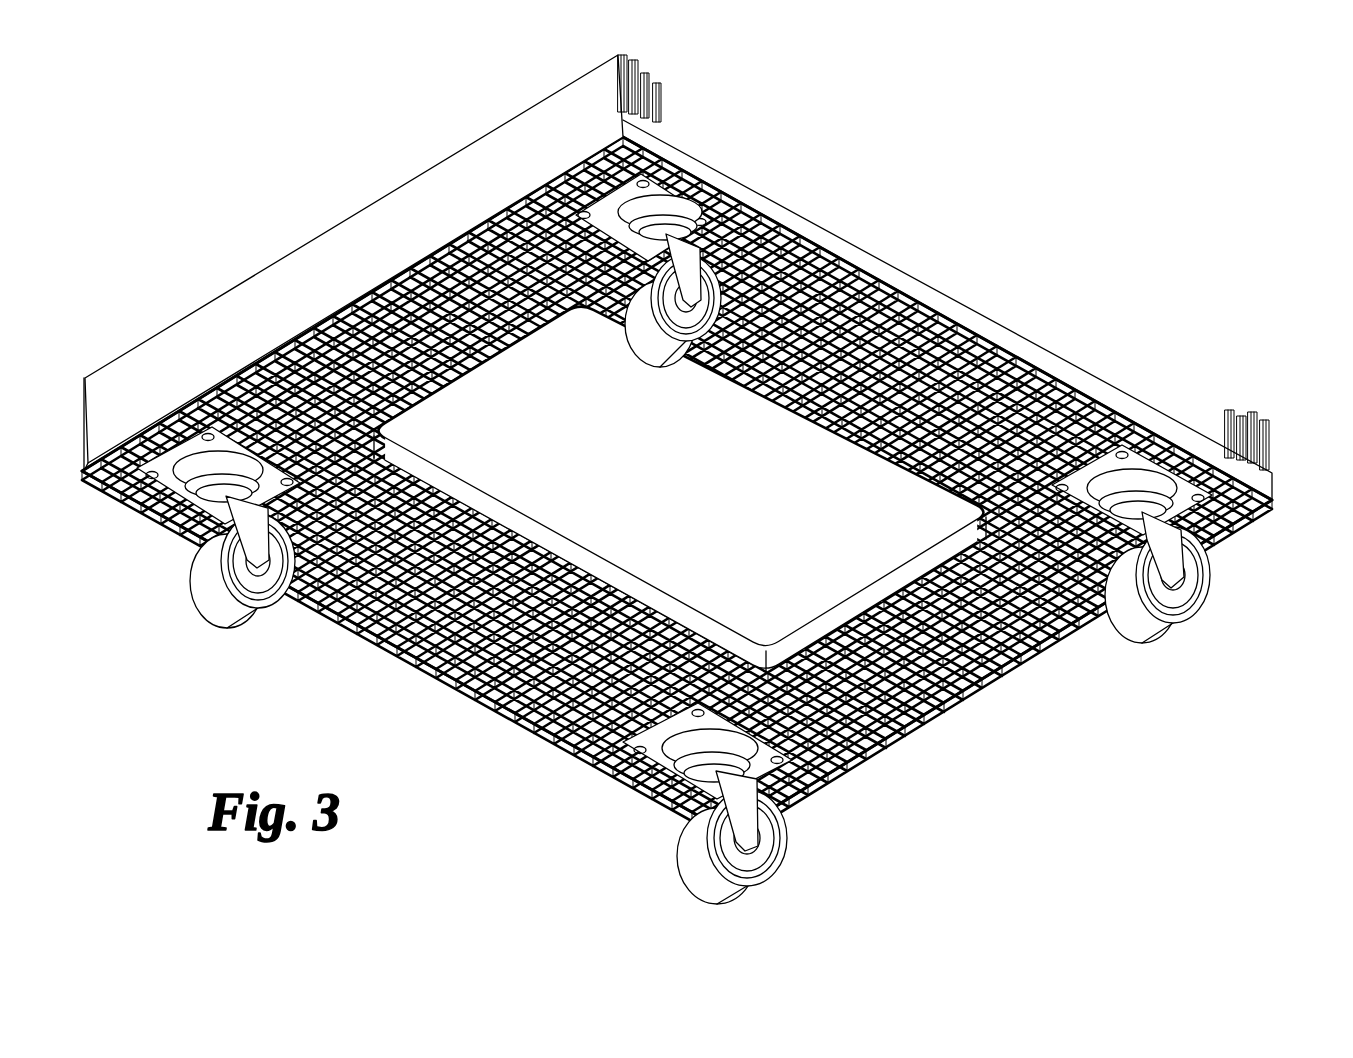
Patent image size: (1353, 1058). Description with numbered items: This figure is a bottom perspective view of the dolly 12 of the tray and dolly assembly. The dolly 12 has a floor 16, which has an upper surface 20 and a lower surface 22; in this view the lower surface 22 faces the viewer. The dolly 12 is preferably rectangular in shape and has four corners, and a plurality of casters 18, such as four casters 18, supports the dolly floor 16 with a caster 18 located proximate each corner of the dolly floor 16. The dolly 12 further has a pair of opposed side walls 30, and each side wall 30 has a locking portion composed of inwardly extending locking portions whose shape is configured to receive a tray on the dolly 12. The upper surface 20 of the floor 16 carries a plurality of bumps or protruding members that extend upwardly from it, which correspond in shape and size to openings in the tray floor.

The dolly 12 is at (835, 211).
The floor 16 is at (928, 290).
The caster 18 is at (633, 355).
The upper surface 20 is at (602, 545).
The lower surface 22 is at (818, 438).
The side wall 30 is at (285, 255).